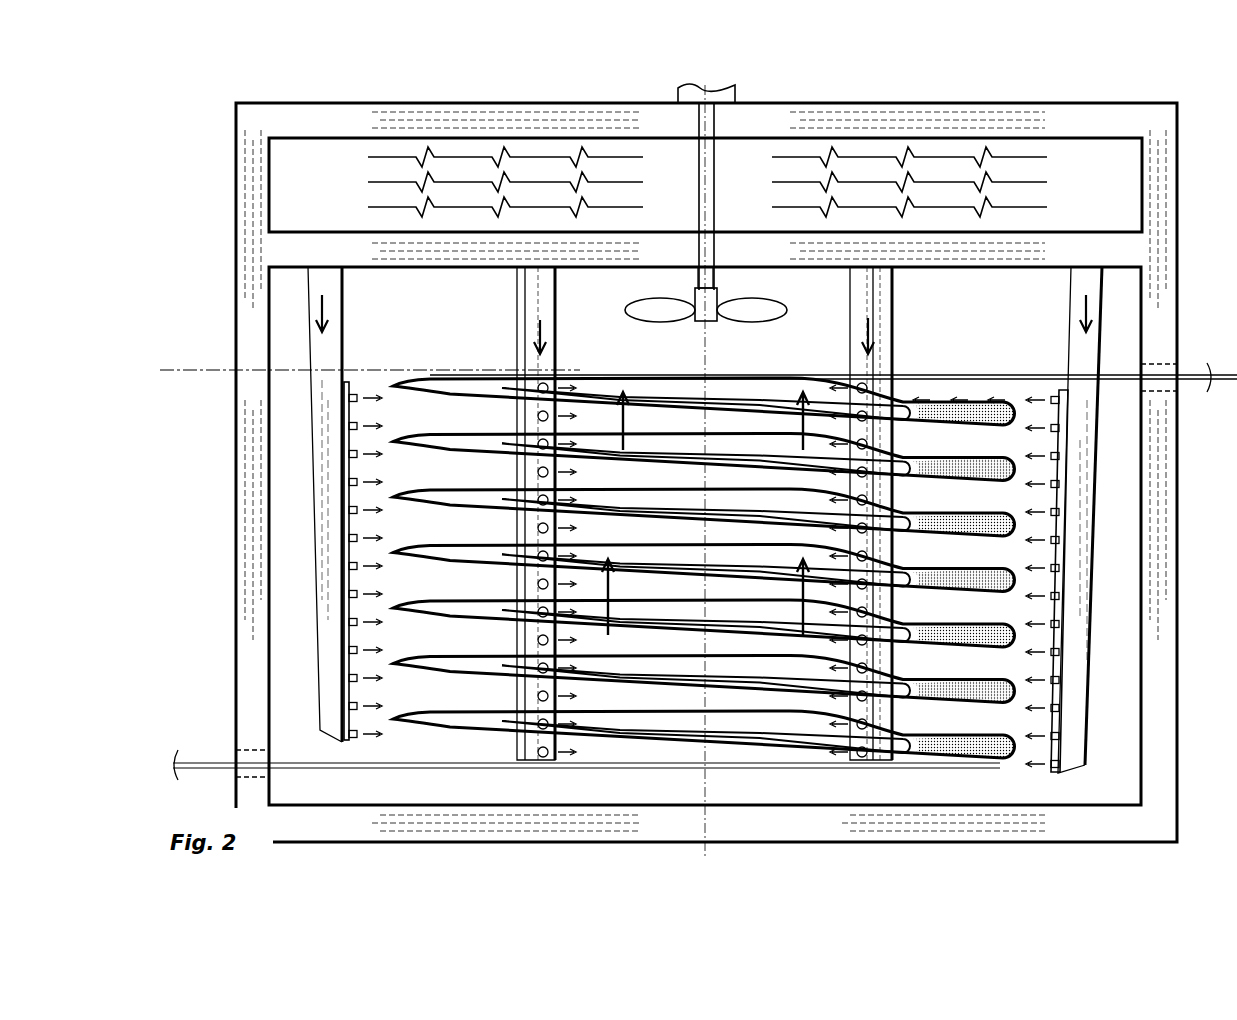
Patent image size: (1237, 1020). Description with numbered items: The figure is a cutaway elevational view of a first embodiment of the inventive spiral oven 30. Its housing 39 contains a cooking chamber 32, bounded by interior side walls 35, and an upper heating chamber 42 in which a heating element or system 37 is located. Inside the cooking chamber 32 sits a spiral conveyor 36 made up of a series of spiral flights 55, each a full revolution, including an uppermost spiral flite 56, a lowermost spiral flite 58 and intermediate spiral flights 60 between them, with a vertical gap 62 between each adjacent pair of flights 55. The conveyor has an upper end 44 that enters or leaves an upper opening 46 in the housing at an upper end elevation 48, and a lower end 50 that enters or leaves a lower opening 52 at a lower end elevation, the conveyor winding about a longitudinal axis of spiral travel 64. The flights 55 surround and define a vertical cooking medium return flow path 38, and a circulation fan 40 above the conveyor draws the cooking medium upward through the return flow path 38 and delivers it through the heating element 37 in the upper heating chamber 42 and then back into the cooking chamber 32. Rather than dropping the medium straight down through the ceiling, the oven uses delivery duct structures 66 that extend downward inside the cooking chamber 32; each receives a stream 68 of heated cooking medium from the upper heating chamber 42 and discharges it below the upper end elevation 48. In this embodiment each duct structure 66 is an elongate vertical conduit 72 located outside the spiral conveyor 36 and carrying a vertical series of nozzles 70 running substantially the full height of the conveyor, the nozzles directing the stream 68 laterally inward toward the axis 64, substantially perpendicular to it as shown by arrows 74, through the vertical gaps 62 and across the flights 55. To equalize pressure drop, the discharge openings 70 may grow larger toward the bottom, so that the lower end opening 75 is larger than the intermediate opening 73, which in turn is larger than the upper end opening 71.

The spiral oven 30 is at (1195, 119).
The cooking chamber 32 is at (920, 795).
The interior side walls 35 is at (270, 402).
The spiral conveyor 36 is at (916, 392).
The heating element 37 is at (452, 157).
The vertical cooking medium return flow path 38 is at (798, 443).
The oven housing 39 is at (236, 103).
The circulation fan 40 is at (655, 308).
The upper heating chamber 42 is at (870, 148).
The upper end of spiral conveyor 44 is at (1018, 372).
The upper opening 46 is at (1160, 392).
The upper end elevation 48 is at (178, 370).
The lower end of spiral conveyor 50 is at (290, 770).
The lower opening 52 is at (245, 745).
The spiral flights 55 is at (1008, 463).
The uppermost spiral flite 56 is at (685, 374).
The lowermost spiral flite 58 is at (882, 770).
The intermediate spiral flights 60 is at (934, 516).
The vertical gaps 62 is at (950, 455).
The longitudinal axis of spiral travel 64 is at (699, 127).
The delivery duct structures 66 is at (520, 652).
The cooking medium stream 68 is at (332, 308).
The discharge openings 70 is at (538, 416).
The upper end opening 71 is at (568, 378).
The elongate vertical conduit 72 is at (332, 340).
The intermediate opening 73 is at (527, 552).
The arrows 74 is at (1000, 395).
The lower end opening 75 is at (548, 762).